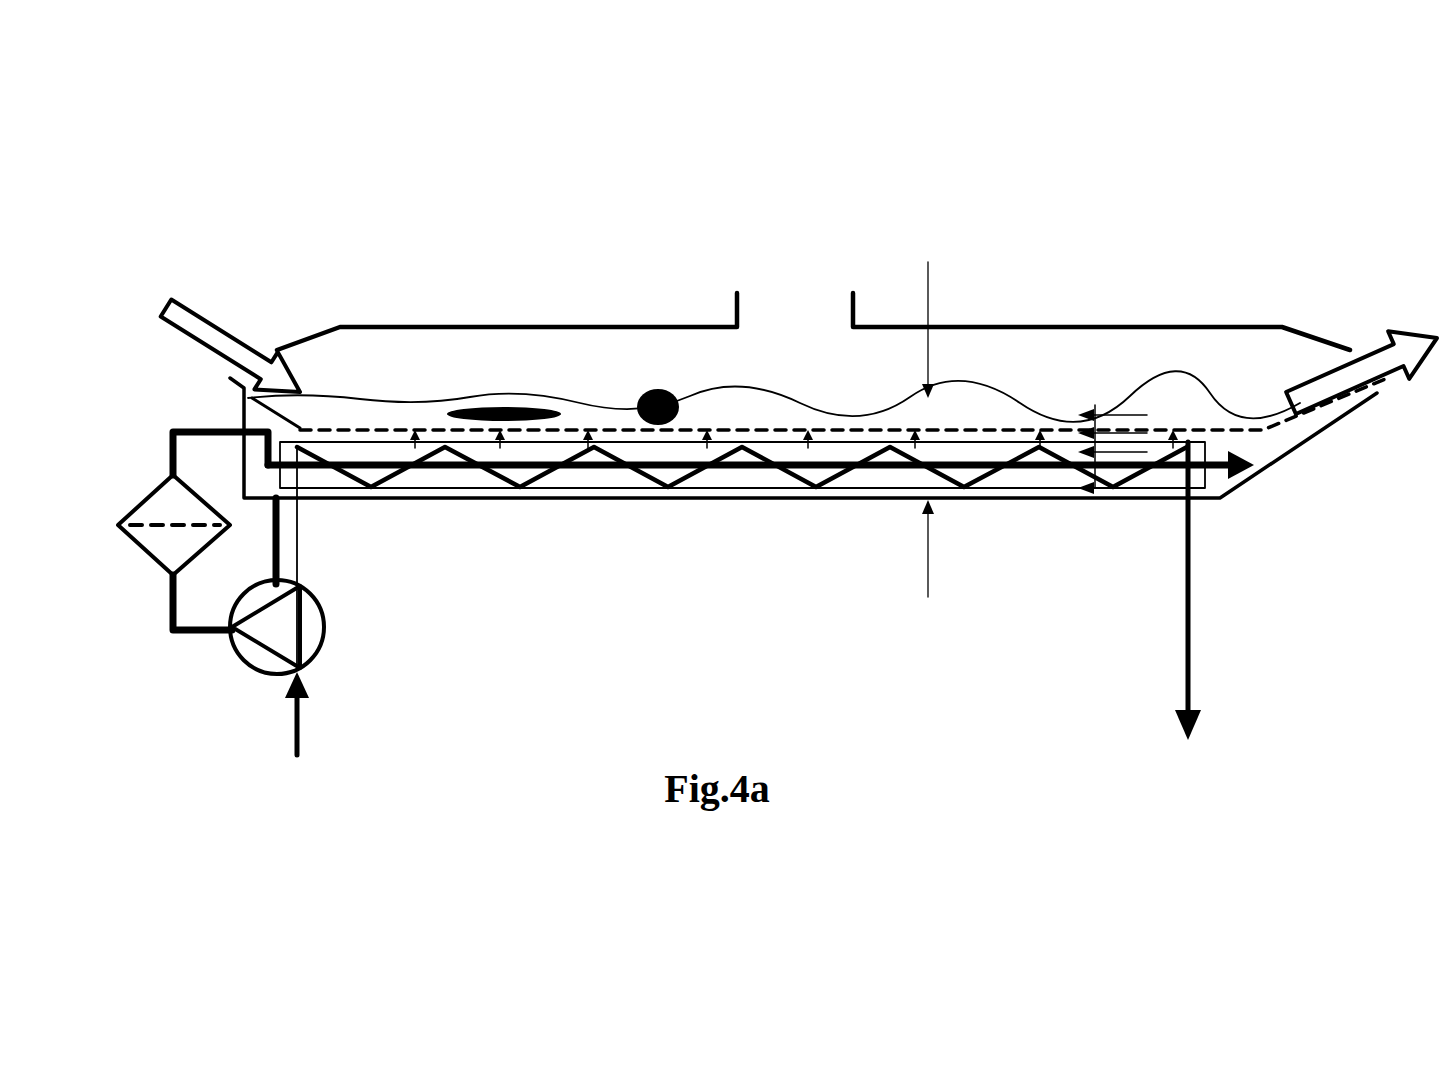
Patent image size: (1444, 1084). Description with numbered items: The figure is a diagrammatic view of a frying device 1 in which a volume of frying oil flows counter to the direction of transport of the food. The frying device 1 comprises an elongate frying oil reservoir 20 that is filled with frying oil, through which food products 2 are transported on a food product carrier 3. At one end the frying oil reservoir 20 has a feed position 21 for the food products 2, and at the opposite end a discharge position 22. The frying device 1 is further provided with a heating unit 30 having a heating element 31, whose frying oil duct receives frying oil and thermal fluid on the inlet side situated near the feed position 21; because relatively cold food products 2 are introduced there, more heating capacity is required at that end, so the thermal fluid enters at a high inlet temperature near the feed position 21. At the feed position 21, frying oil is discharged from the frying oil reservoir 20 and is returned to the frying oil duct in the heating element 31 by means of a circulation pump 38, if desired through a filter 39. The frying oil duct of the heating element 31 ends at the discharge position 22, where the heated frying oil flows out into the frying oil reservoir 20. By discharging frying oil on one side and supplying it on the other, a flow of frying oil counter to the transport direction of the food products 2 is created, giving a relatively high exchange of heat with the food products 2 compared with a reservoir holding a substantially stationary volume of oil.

The frying device 1 is at (585, 287).
The food products 2 is at (660, 395).
The food product carrier 3 is at (610, 430).
The frying oil reservoir 20 is at (1193, 350).
The feed position 21 is at (193, 322).
The discharge position 22 is at (1350, 373).
The heating unit 30 is at (281, 613).
The heating element 31 is at (484, 470).
The circulation pump 38 is at (280, 627).
The filter 39 is at (177, 550).